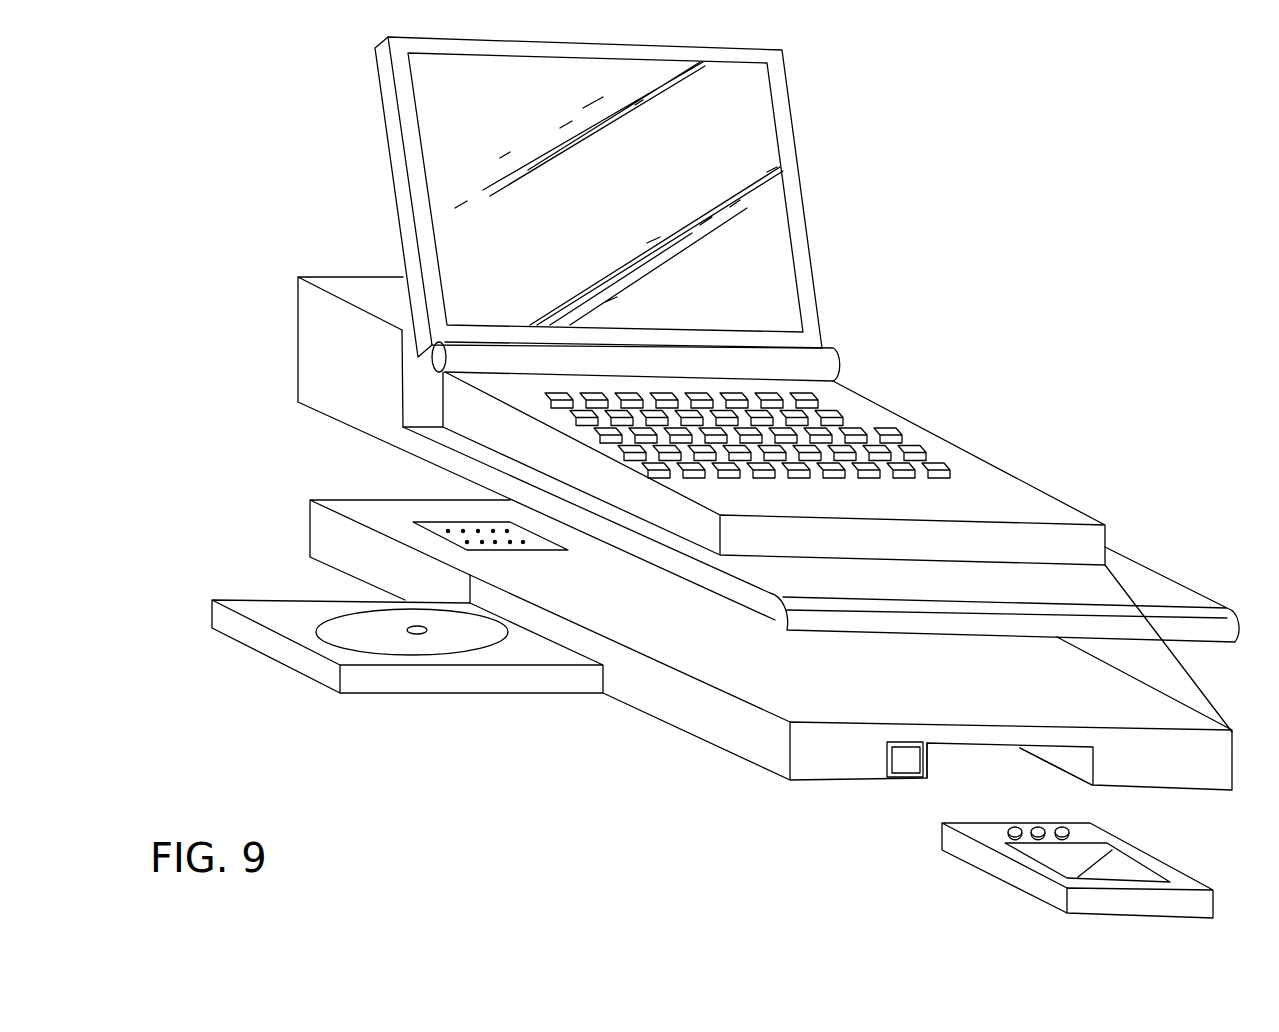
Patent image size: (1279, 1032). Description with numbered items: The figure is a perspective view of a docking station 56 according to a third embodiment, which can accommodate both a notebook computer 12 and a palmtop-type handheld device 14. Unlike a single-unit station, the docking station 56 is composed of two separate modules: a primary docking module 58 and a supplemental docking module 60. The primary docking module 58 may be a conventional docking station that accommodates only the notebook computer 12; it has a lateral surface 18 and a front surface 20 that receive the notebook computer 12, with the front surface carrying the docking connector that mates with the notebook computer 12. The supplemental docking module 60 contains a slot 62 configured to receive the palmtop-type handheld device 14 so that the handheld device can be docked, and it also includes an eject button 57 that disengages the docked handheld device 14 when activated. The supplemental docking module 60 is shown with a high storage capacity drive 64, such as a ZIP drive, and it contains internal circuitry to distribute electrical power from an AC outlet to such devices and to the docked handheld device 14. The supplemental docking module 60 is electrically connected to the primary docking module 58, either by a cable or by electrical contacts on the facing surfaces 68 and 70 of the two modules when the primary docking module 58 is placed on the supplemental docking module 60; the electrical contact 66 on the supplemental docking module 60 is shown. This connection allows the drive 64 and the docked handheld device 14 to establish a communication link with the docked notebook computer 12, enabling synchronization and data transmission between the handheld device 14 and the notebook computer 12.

The notebook computer 12 is at (788, 103).
The palmtop-type handheld device 14 is at (1217, 907).
The lateral surface 18 is at (1167, 592).
The front surface 20 is at (410, 390).
The docking station 56 is at (510, 448).
The eject button 57 is at (897, 778).
The primary docking module 58 is at (313, 352).
The supplemental docking module 60 is at (310, 518).
The slot 62 is at (957, 765).
The high storage capacity drive 64 is at (488, 680).
The electrical contact 66 is at (520, 550).
The facing surface 68 is at (1189, 662).
The facing surface 70 is at (739, 672).